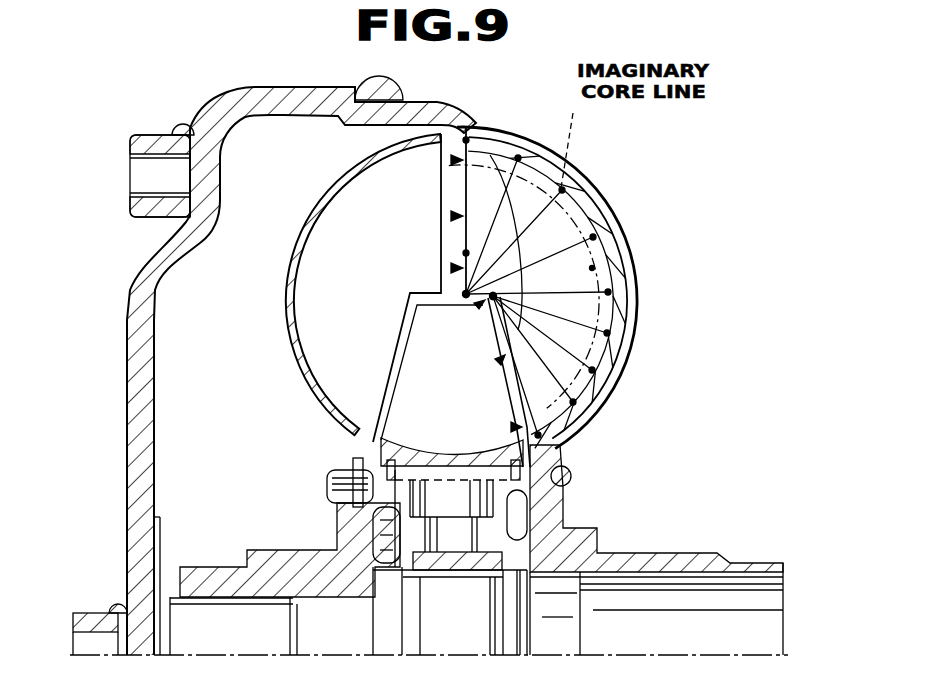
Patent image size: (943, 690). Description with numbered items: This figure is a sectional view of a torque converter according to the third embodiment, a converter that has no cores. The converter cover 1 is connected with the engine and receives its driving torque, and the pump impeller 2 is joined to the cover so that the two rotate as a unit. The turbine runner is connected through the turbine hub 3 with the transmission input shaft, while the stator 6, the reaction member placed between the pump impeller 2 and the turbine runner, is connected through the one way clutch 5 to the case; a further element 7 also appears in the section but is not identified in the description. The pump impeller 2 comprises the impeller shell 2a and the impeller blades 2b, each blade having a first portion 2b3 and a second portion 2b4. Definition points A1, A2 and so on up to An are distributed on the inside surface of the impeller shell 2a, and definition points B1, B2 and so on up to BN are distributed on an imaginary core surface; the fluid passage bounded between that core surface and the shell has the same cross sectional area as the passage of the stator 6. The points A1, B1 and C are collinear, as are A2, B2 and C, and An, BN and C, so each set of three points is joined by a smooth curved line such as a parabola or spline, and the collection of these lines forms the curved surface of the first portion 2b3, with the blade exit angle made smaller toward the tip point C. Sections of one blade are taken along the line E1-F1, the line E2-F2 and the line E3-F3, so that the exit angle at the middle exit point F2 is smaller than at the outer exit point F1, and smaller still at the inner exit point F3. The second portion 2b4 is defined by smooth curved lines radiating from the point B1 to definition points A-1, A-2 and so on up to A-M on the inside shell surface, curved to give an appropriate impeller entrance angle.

The converter cover 1 is at (221, 110).
The pump impeller 2 is at (637, 297).
The impeller shell 2a is at (615, 371).
The impeller blade 2b is at (653, 308).
The first portion 2b3 is at (540, 225).
The second portion 2b4 is at (636, 308).
The turbine hub 3 is at (217, 578).
The one way clutch 5 is at (533, 507).
The stator 6 is at (360, 448).
The pump shell 7 is at (318, 350).
The definition point An is at (467, 137).
The definition point A1 is at (611, 292).
The definition point A2 is at (598, 238).
The definition point A-1 is at (609, 335).
The definition point A-2 is at (609, 391).
The definition point A-M is at (560, 443).
The definition point B1 is at (488, 302).
The definition point B2 is at (592, 268).
The definition point BN is at (464, 252).
The tip point C is at (410, 293).
The section line point E1 is at (514, 427).
The section line point E2 is at (499, 361).
The section line point E3 is at (479, 305).
The outer exit point F1 is at (457, 160).
The middle exit point F2 is at (457, 216).
The inner exit point F3 is at (457, 268).